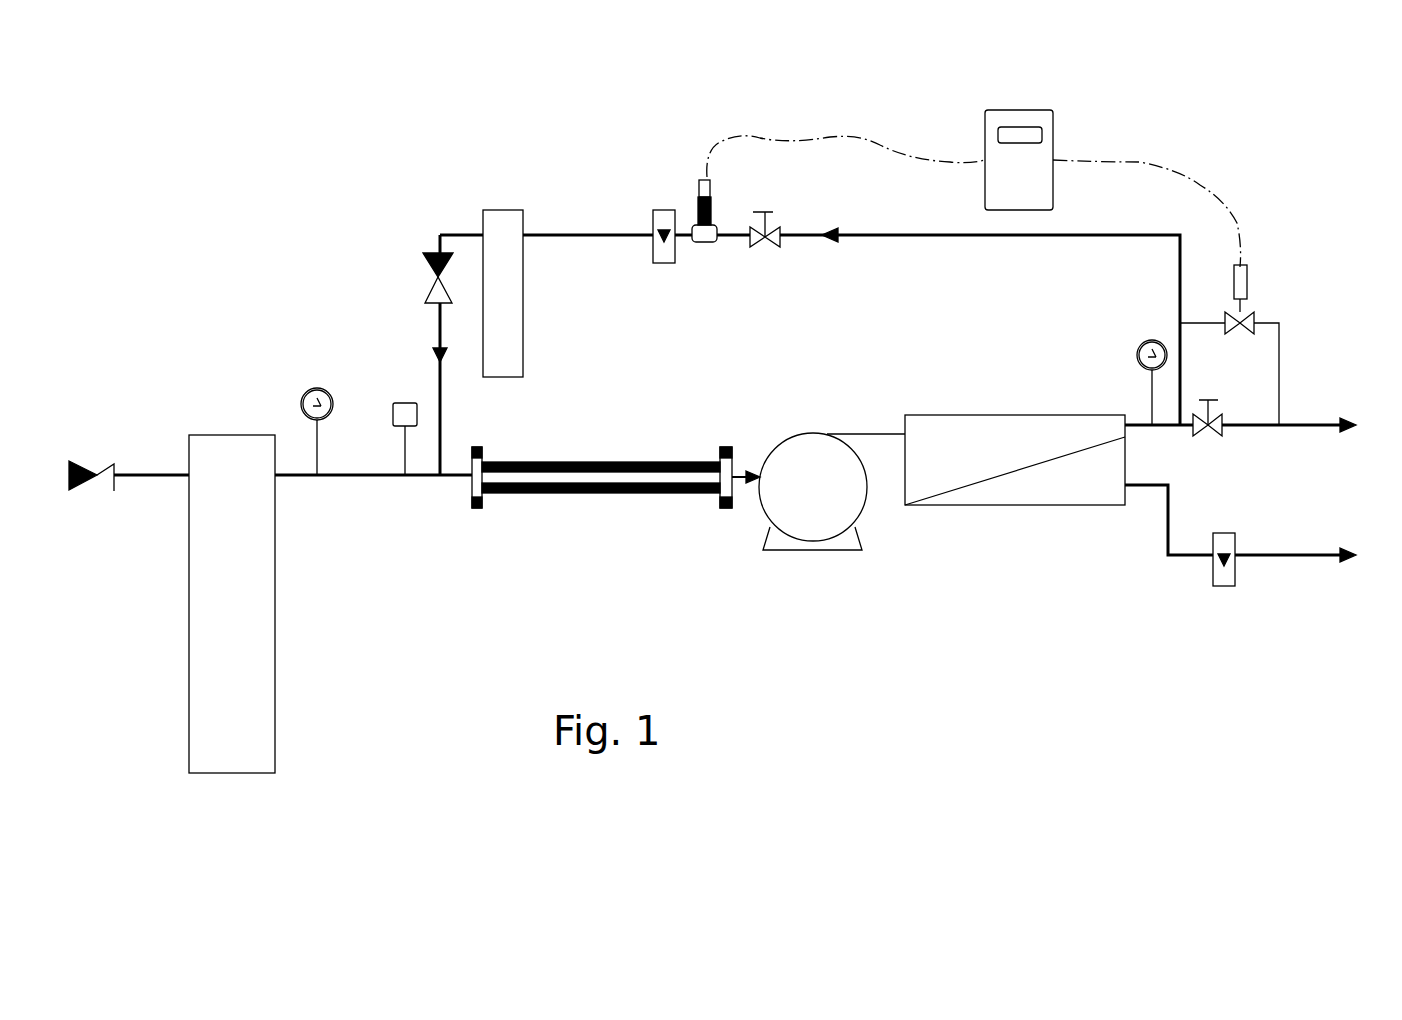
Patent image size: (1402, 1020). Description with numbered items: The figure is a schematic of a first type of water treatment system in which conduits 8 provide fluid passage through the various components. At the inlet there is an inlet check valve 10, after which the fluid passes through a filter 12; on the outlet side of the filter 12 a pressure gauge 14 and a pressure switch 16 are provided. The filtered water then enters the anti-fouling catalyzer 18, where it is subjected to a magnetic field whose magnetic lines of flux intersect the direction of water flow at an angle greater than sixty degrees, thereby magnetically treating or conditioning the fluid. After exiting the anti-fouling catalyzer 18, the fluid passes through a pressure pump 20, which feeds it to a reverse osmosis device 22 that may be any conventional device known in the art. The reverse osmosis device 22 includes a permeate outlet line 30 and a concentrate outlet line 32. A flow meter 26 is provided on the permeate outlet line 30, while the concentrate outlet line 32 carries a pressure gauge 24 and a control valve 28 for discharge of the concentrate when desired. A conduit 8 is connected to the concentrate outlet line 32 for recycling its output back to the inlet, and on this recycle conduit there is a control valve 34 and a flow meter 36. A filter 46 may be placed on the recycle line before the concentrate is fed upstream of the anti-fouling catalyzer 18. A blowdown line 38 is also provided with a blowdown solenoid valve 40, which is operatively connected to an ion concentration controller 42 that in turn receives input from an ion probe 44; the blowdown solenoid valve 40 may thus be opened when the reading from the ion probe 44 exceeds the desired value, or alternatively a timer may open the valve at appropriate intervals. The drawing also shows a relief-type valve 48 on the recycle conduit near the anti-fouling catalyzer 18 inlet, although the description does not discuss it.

The conduits 8 is at (149, 468).
The inlet check valve 10 is at (55, 436).
The filter 12 is at (275, 617).
The pressure gauge 14 is at (317, 388).
The pressure switch 16 is at (402, 403).
The anti-fouling catalyzer 18 is at (625, 462).
The pressure pump 20 is at (783, 435).
The reverse osmosis device 22 is at (973, 413).
The pressure gauge 24 is at (1136, 342).
The flow meter 26 is at (1215, 585).
The control valve 28 is at (1209, 439).
The permeate outlet line 30 is at (1167, 535).
The concentrate outlet line 32 is at (1259, 429).
The control valve 34 is at (780, 227).
The flow meter 36 is at (650, 262).
The blowdown line 38 is at (1280, 336).
The blowdown solenoid valve 40 is at (1250, 315).
The ion concentration controller 42 is at (1053, 123).
The ion probe 44 is at (700, 180).
The filter 46 is at (525, 323).
The relief valve 48 is at (435, 260).